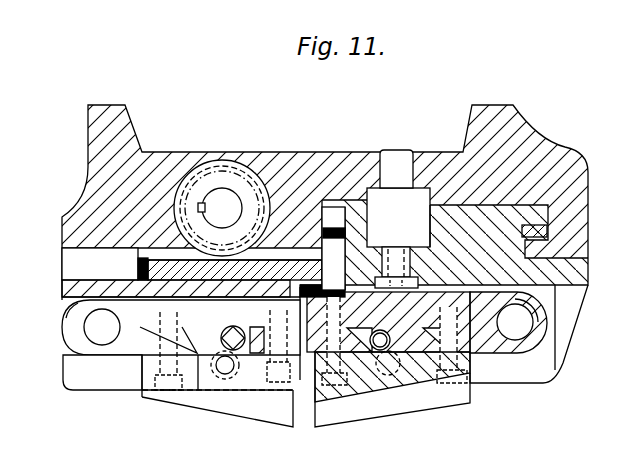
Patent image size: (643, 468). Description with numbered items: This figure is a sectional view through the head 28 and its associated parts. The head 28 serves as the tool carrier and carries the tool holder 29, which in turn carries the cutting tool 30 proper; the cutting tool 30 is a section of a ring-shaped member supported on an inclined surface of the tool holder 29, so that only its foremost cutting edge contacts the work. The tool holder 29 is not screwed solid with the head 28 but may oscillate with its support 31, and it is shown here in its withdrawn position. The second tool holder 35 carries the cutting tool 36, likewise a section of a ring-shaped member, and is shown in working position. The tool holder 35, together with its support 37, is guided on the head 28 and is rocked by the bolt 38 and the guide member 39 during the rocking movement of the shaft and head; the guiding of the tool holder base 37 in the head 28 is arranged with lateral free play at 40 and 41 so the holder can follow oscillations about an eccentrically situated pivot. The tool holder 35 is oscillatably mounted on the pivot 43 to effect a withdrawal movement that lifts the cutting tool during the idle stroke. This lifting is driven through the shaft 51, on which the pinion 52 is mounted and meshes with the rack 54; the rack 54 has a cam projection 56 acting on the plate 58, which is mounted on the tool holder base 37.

The head 28 is at (558, 150).
The tool holder 29 is at (200, 373).
The cutting tool 30 is at (253, 408).
The support 31 is at (132, 350).
The second tool holder 35 is at (427, 392).
The cutting tool 36 is at (357, 412).
The support 37 is at (434, 340).
The bolt 38 is at (392, 160).
The guide member 39 is at (398, 238).
The free play 40 is at (322, 207).
The free play 41 is at (523, 231).
The pivot 43 is at (533, 323).
The shaft 51 is at (278, 247).
The pinion 52 is at (221, 161).
The rack 54 is at (138, 266).
The cam projection 56 is at (444, 290).
The plate 58 is at (388, 338).